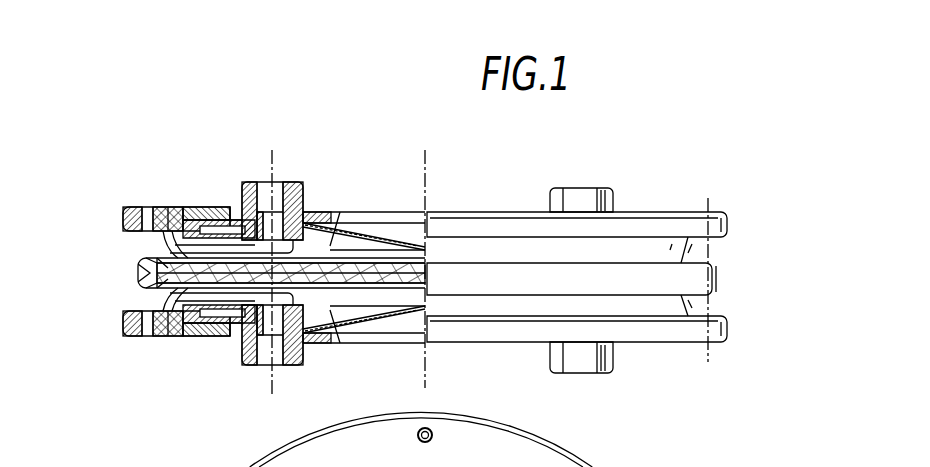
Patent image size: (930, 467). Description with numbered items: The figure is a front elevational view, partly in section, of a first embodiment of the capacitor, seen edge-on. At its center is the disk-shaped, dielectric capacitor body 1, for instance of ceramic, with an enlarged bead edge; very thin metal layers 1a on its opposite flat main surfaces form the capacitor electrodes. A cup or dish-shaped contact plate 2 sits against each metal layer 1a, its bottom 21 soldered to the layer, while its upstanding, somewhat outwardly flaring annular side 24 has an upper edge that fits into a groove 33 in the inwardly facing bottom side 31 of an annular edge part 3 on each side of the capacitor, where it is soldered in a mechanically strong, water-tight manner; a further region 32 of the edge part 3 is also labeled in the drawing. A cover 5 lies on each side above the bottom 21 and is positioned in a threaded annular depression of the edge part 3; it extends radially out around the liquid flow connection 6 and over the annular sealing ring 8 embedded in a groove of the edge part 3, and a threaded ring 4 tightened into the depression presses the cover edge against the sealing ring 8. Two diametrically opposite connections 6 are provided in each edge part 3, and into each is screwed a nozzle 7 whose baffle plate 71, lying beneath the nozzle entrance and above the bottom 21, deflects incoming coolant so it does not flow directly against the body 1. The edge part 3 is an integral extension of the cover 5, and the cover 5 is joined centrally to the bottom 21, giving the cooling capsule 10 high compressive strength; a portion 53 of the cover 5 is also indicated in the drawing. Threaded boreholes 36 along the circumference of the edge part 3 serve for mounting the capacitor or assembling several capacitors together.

The capacitor body 1 is at (138, 273).
The metal layers 1a is at (137, 268).
The contact plate 2 is at (200, 246).
The annular edge part 3 is at (125, 211).
The threaded ring 4 is at (213, 207).
The cover 5 is at (380, 240).
The liquid flow connection 6 is at (303, 190).
The nozzle 7 is at (274, 205).
The sealing ring 8 is at (200, 207).
The cooling capsule 10 is at (672, 207).
The bottom of the contact plate 21 is at (200, 287).
The annular side of the contact plate 24 is at (150, 288).
The bottom side of the edge part 31 is at (165, 207).
The seal ring 32 is at (175, 207).
The groove 33 is at (150, 207).
The threaded boreholes 36 is at (135, 207).
The wedge 53 is at (347, 235).
The baffle plate 71 is at (318, 212).